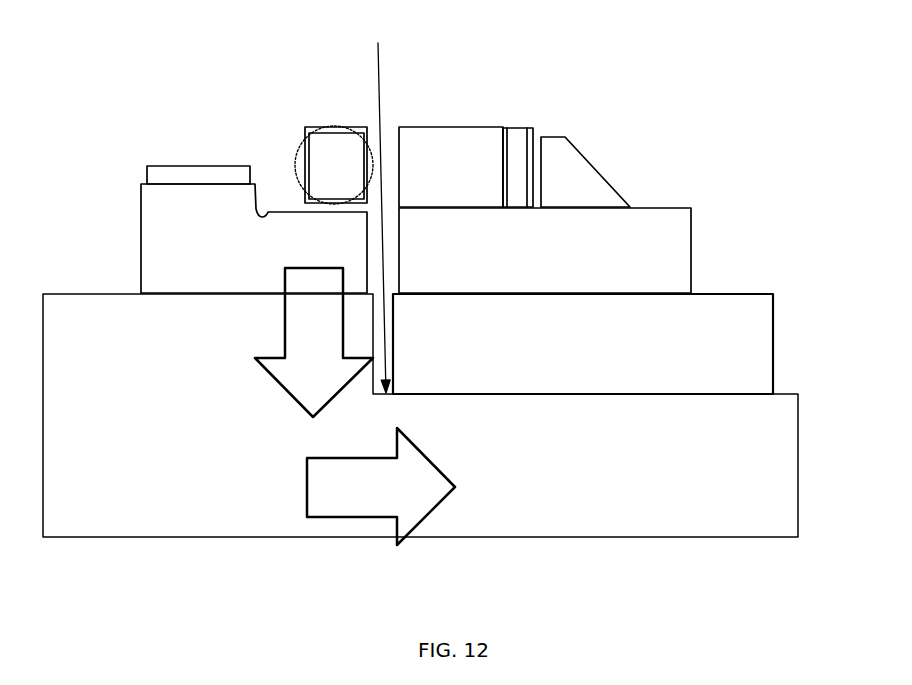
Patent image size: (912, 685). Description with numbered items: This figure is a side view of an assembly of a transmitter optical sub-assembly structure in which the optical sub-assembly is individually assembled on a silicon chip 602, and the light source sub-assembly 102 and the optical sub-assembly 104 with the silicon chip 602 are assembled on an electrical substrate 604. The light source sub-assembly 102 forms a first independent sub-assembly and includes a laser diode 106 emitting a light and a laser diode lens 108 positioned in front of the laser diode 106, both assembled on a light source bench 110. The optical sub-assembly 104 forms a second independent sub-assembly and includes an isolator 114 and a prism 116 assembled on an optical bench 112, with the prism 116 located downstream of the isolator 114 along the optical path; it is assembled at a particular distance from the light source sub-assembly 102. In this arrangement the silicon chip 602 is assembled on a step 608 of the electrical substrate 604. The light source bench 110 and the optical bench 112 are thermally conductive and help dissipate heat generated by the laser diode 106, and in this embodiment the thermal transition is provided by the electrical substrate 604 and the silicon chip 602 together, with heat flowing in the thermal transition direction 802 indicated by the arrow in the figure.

The light source sub-assembly 102 is at (222, 145).
The optical sub-assembly 104 is at (654, 168).
The laser diode 106 is at (192, 176).
The laser diode lens 108 is at (332, 157).
The light source bench 110 is at (169, 258).
The optical bench 112 is at (618, 240).
The isolator 114 is at (450, 145).
The prism 116 is at (576, 165).
The silicon chip 602 is at (784, 334).
The electrical substrate 604 is at (172, 548).
The step 608 is at (388, 205).
The thermal transition direction 802 is at (357, 539).